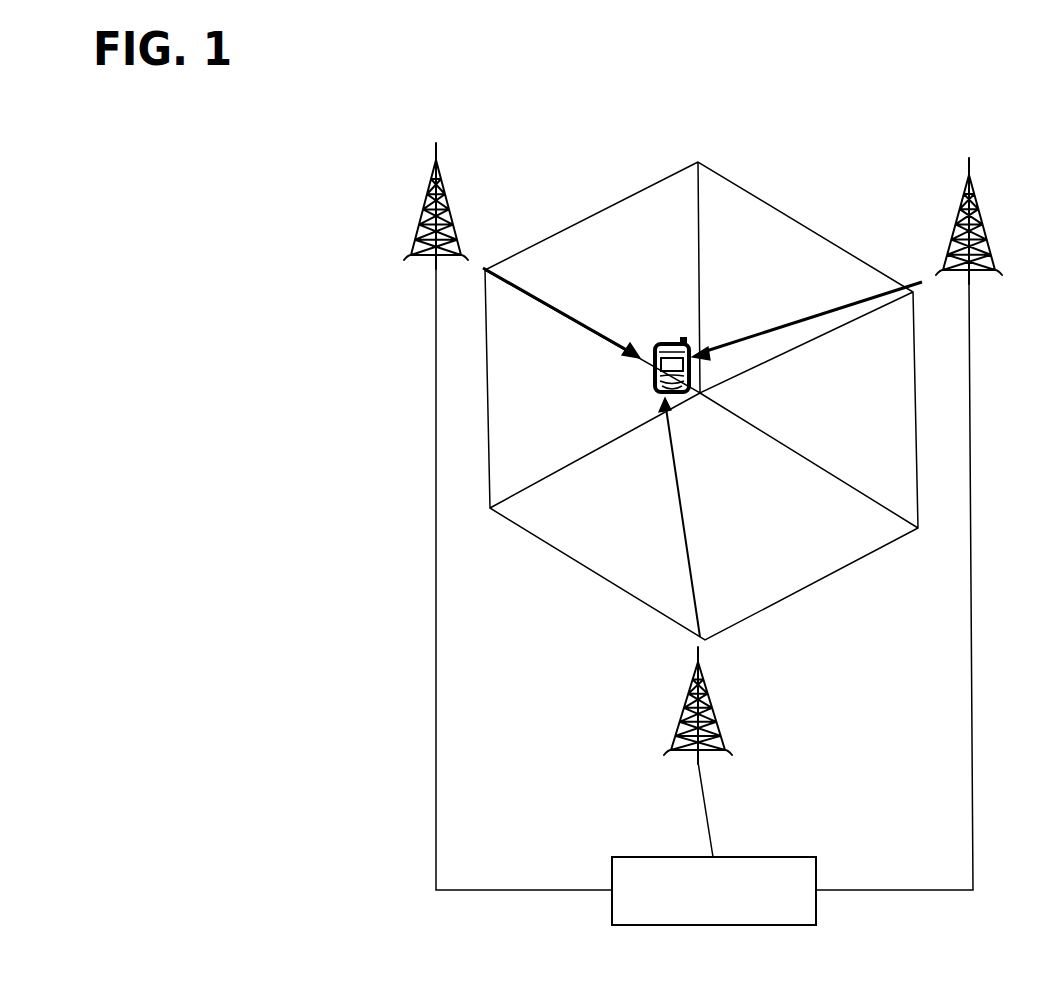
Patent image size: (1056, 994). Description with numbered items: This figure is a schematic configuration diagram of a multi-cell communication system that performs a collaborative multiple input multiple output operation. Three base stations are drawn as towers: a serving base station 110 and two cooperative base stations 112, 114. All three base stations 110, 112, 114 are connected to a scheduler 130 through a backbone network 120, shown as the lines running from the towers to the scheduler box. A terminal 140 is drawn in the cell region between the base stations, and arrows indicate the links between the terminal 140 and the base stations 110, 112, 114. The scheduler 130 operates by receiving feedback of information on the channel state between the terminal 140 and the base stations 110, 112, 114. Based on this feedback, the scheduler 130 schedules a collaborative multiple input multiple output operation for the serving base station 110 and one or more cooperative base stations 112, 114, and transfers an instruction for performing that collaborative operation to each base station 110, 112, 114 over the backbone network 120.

The serving base station 110 is at (448, 180).
The cooperative base station 112 is at (982, 202).
The cooperative base station 114 is at (725, 720).
The backbone network 120 is at (973, 675).
The scheduler 130 is at (773, 857).
The terminal 140 is at (663, 340).